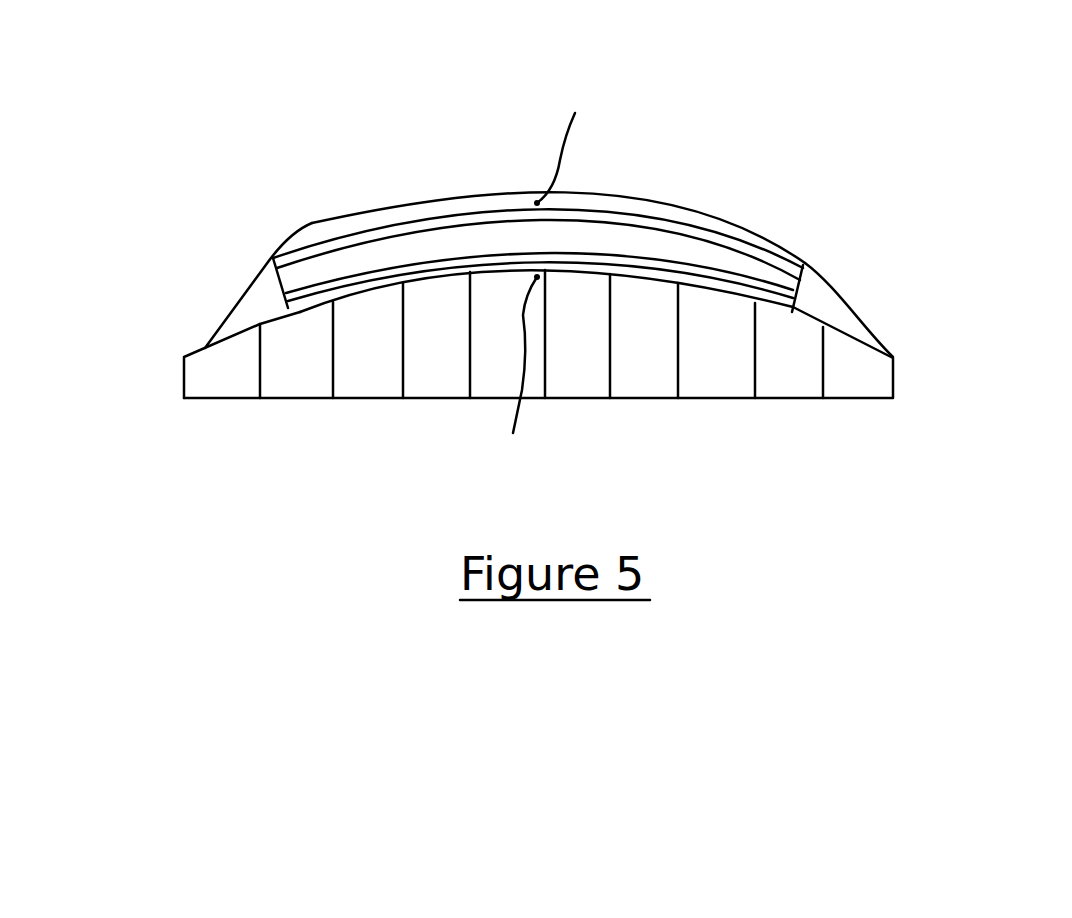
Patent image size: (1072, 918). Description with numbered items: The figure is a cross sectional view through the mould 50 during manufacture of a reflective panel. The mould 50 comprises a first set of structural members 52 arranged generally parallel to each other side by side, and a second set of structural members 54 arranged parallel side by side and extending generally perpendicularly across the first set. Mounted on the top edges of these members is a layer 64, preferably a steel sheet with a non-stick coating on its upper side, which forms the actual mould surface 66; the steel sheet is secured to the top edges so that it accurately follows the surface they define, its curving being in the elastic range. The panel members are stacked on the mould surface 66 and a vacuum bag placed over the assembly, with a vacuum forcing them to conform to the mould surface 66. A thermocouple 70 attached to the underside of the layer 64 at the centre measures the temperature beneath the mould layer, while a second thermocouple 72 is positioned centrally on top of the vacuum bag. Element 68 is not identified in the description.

The mould 50 is at (917, 372).
The first set of structural members 52 is at (755, 362).
The second set of structural members 54 is at (847, 372).
The layer 64 is at (190, 355).
The mould surface 66 is at (812, 315).
The flap 68 is at (250, 263).
The thermocouple 70 is at (520, 353).
The thermocouple 72 is at (565, 158).